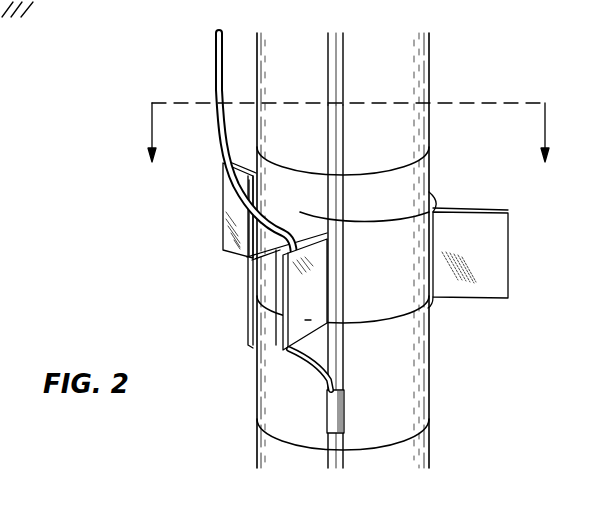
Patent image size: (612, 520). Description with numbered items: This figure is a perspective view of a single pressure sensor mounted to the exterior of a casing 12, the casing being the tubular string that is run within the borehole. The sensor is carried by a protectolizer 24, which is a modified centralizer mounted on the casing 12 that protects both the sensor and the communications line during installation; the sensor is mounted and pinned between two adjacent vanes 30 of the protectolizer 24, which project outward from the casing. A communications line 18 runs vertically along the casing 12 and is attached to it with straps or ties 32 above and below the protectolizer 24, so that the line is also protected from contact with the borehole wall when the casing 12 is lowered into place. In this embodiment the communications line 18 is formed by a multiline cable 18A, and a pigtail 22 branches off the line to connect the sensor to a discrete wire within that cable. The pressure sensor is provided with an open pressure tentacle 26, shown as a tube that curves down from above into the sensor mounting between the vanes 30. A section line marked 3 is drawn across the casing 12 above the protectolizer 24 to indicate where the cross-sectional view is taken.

The casing 12 is at (310, 70).
The communications line 18 is at (338, 350).
The multiline cable 18A is at (343, 68).
The pigtail 22 is at (295, 360).
The protectolizer 24 is at (394, 287).
The open pressure tentacle 26 is at (213, 62).
The vane 30 is at (488, 245).
The strap or tie 32 is at (373, 170).
The section line 3- 3 is at (350, 145).